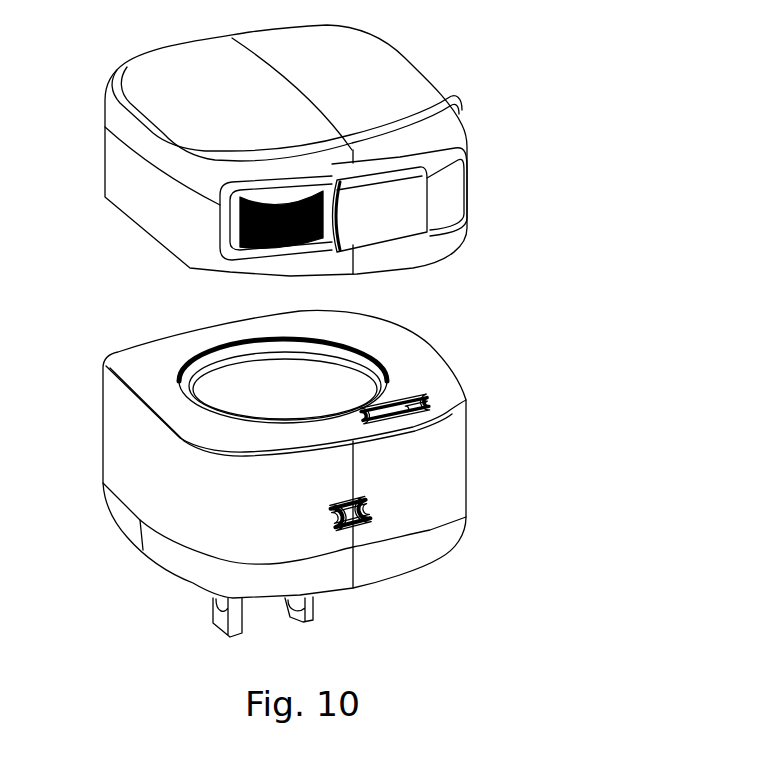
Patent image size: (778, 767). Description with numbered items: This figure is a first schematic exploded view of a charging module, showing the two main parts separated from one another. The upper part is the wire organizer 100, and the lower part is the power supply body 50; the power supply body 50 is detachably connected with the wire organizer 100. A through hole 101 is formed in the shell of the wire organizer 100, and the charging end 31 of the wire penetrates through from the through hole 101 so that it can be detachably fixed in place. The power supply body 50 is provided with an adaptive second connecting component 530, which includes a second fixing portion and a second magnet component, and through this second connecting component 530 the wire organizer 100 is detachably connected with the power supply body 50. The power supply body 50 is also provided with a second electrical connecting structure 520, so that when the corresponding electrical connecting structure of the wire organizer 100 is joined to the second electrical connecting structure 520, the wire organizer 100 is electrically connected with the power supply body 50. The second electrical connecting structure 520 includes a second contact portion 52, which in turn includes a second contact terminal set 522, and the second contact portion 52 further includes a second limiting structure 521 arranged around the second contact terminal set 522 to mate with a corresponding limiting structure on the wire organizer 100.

The wire organizer 100 is at (368, 88).
The charging end 31 is at (383, 217).
The through hole 101 is at (222, 245).
The power supply body 50 is at (423, 487).
The second connecting component 530 is at (322, 383).
The second electrical connecting structure 520 is at (703, 318).
The second contact portion 52 is at (628, 320).
The second contact terminal set 522 is at (410, 401).
The second limiting structure 521 is at (422, 413).